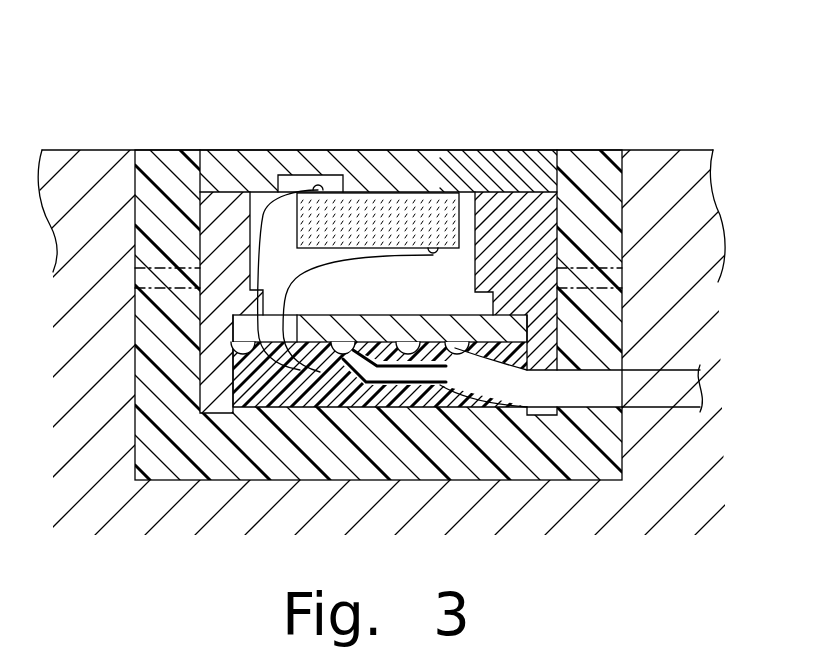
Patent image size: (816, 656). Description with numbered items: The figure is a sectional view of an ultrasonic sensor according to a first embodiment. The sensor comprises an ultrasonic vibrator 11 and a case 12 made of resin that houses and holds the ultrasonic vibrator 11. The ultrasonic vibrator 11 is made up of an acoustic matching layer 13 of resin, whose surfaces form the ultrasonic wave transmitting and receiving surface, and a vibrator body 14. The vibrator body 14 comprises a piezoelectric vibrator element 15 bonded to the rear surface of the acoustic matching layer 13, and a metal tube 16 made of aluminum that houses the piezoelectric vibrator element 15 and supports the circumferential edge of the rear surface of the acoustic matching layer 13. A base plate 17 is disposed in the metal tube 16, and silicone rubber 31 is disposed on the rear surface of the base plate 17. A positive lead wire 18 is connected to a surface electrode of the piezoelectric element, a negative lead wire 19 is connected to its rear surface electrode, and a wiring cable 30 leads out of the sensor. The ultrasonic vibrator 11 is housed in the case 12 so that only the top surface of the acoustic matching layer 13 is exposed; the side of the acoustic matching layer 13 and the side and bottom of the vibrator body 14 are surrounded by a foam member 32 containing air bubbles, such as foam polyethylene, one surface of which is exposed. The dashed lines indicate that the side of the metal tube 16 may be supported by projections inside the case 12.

The ultrasonic vibrator 11 is at (570, 62).
The case 12 is at (671, 152).
The acoustic matching layer 13 is at (453, 150).
The vibrator body 14 is at (625, 115).
The piezoelectric vibrator element 15 is at (460, 212).
The metal tube 16 is at (545, 230).
The base plate 17 is at (427, 323).
The positive lead wire 18 is at (318, 267).
The negative lead wire 19 is at (267, 200).
The wiring cable 30 is at (673, 380).
The silicone rubber 31 is at (347, 397).
The foam member 32 is at (167, 150).